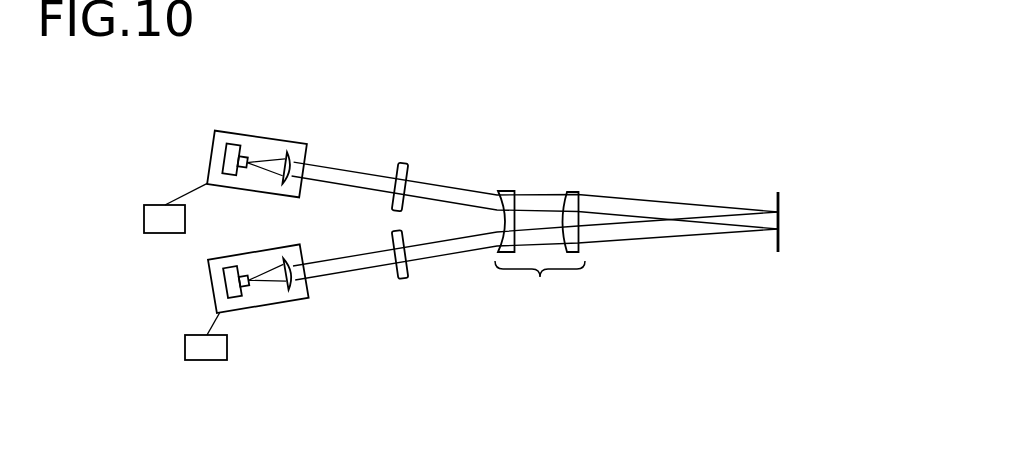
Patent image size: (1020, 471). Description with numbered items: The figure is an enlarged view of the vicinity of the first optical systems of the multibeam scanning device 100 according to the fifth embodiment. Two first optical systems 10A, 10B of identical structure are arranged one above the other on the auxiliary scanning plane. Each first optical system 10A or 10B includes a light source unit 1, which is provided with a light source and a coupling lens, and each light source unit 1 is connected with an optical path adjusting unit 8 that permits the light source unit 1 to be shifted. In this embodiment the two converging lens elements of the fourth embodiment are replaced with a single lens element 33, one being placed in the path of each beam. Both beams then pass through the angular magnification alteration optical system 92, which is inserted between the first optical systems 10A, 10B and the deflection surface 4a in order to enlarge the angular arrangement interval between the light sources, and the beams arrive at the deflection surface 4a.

The multibeam scanning device 100 is at (662, 115).
The first optical system 10A is at (329, 133).
The first optical system 10B is at (345, 314).
The light source unit 1 is at (237, 130).
The optical path adjusting unit 8 is at (156, 233).
The lens element 33 is at (407, 171).
The angular magnification alteration optical system 92 is at (540, 249).
The deflection surface 4a is at (780, 202).